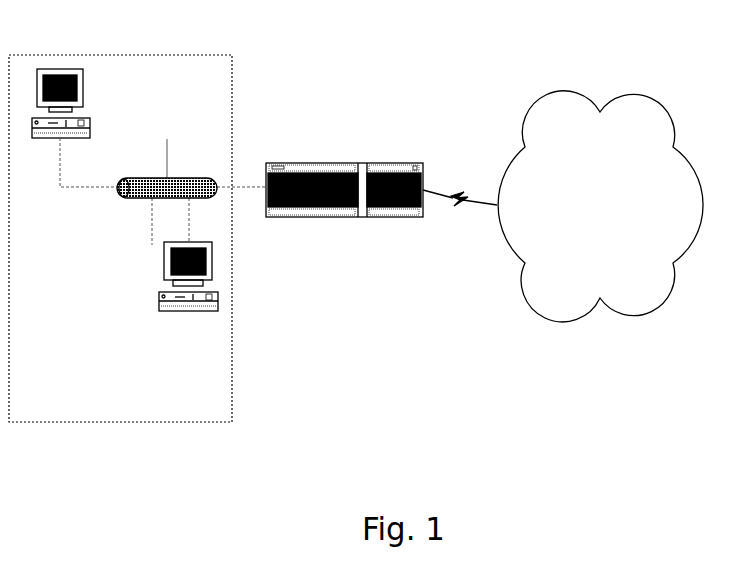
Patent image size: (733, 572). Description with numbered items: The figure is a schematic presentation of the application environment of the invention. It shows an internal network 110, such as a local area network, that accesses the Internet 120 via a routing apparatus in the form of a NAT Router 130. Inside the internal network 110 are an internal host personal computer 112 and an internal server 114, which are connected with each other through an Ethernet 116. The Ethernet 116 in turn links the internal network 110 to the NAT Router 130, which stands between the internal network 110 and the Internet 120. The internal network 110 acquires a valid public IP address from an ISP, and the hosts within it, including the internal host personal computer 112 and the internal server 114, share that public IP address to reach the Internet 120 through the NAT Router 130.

The internal network 110 is at (240, 373).
The internal host personal computer 112 is at (92, 100).
The internal server 114 is at (217, 272).
The Ethernet 116 is at (177, 175).
The Internet 120 is at (568, 85).
The NAT Router 130 is at (317, 155).